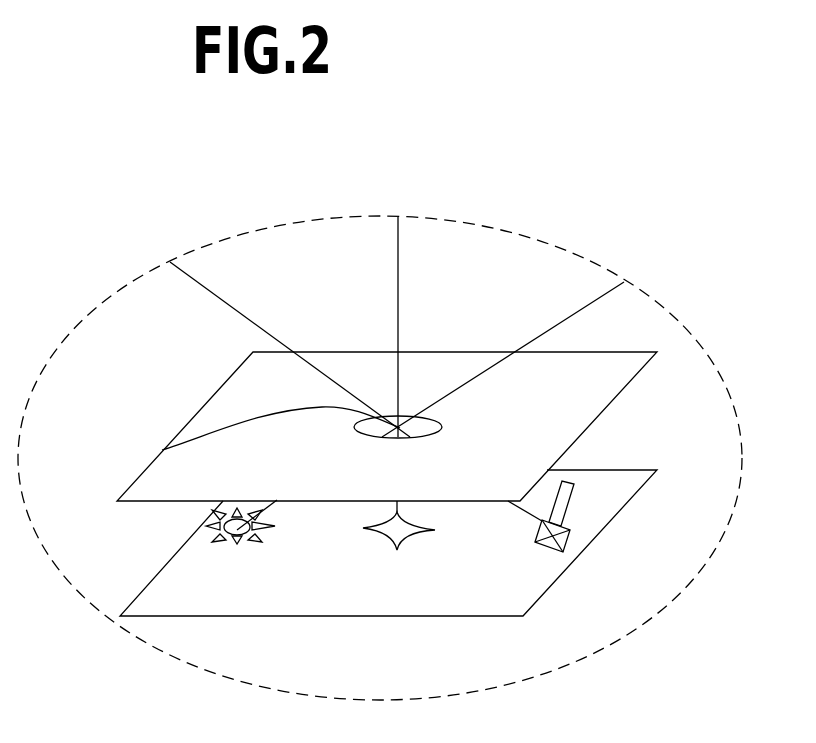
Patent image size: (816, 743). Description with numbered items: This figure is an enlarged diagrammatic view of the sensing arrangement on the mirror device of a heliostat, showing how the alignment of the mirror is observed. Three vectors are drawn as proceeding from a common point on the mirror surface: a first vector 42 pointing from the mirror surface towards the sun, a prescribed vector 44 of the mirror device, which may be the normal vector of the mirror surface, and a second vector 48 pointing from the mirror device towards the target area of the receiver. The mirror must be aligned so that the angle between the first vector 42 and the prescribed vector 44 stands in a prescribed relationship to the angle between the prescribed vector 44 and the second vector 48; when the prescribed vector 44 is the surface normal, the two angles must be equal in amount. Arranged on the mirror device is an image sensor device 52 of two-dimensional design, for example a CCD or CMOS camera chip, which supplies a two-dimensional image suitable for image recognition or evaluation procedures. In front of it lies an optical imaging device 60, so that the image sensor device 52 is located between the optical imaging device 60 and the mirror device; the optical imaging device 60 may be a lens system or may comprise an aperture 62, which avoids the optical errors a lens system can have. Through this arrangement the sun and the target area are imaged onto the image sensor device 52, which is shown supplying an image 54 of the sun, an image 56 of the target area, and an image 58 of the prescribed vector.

The first vector 42 is at (540, 335).
The prescribed vector 44 is at (397, 317).
The second vector 48 is at (235, 309).
The image sensor device 52 is at (445, 598).
The image of the sun 54 is at (233, 535).
The image of the target area 56 is at (570, 530).
The image of the prescribed vector 58 is at (395, 538).
The optical imaging device 60 is at (584, 408).
The aperture 62 is at (162, 450).